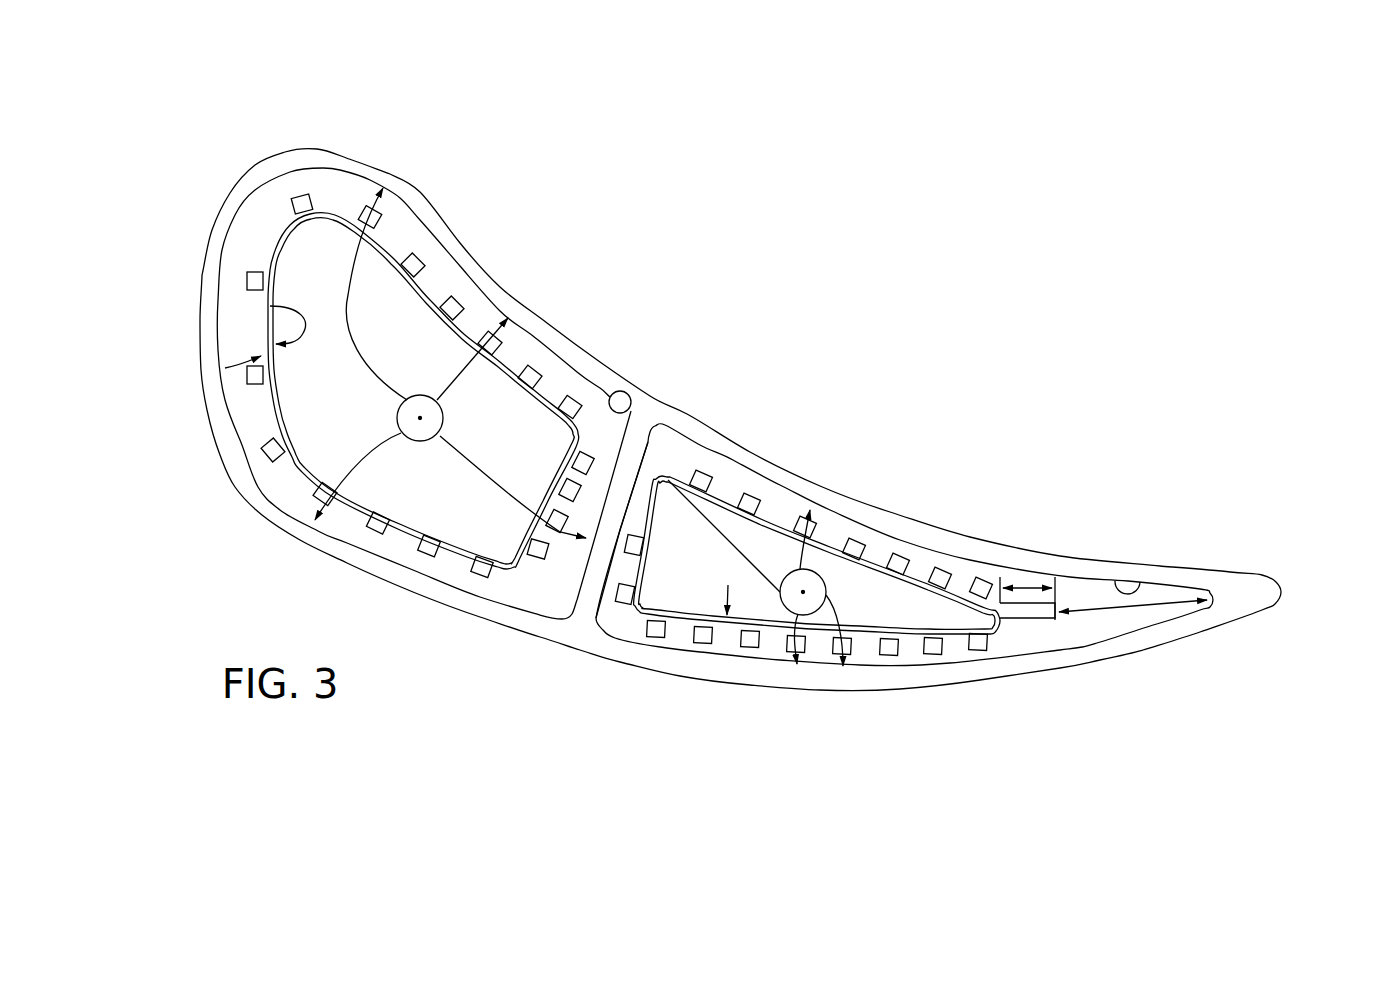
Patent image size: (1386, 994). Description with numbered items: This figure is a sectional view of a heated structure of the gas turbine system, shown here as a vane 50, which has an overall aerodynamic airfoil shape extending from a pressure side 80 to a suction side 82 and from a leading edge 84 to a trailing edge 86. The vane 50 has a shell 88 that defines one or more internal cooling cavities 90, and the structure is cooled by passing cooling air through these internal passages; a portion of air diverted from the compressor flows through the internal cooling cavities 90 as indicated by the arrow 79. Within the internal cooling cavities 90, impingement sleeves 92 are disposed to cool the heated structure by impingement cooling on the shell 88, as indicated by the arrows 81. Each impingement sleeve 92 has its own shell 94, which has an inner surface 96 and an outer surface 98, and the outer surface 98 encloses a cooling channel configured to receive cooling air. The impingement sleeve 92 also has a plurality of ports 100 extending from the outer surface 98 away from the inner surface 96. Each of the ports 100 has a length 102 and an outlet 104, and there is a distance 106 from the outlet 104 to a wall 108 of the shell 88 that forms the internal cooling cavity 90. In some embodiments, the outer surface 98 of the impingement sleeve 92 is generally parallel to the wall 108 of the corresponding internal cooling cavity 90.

The vane 50 is at (767, 247).
The arrow 79 is at (443, 415).
The pressure side 80 is at (602, 362).
The arrows 81 is at (350, 298).
The suction side 82 is at (533, 641).
The leading edge 84 is at (228, 194).
The trailing edge 86 is at (1281, 588).
The shell 88 is at (352, 163).
The internal cooling cavity 90 is at (553, 383).
The impingement sleeve 92 is at (353, 513).
The shell 94 is at (305, 486).
The inner surface 96 is at (270, 306).
The outer surface 98 is at (225, 368).
The ports 100 is at (378, 538).
The length 102 is at (966, 568).
The outlet 104 is at (458, 305).
The distance 106 is at (1137, 606).
The wall 108 is at (629, 397).